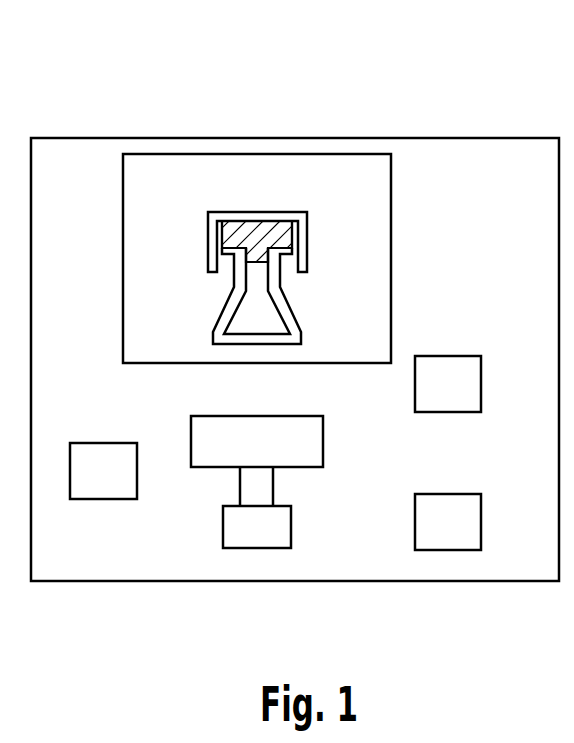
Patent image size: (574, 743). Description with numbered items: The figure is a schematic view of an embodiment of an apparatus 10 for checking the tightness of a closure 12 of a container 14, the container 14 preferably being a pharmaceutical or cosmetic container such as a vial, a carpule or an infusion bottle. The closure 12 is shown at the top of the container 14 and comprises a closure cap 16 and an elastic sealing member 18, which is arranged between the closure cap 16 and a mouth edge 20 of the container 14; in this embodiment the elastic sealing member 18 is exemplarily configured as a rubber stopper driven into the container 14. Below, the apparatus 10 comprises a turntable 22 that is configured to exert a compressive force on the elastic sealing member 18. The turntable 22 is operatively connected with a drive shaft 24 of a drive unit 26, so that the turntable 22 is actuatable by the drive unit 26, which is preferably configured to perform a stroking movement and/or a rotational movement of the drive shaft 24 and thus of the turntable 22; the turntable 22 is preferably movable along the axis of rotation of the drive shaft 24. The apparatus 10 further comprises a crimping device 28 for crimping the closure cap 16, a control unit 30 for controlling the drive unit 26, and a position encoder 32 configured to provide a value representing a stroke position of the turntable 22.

The apparatus 10 is at (501, 107).
The closure 12 is at (330, 236).
The container 14 is at (323, 306).
The closure cap 16 is at (208, 255).
The elastic sealing member 18 is at (255, 224).
The mouth edge 20 is at (285, 221).
The turntable 22 is at (310, 442).
The drive shaft 24 is at (260, 489).
The drive unit 26 is at (278, 530).
The crimping device 28 is at (460, 400).
The control unit 30 is at (116, 484).
The position encoder 32 is at (460, 534).